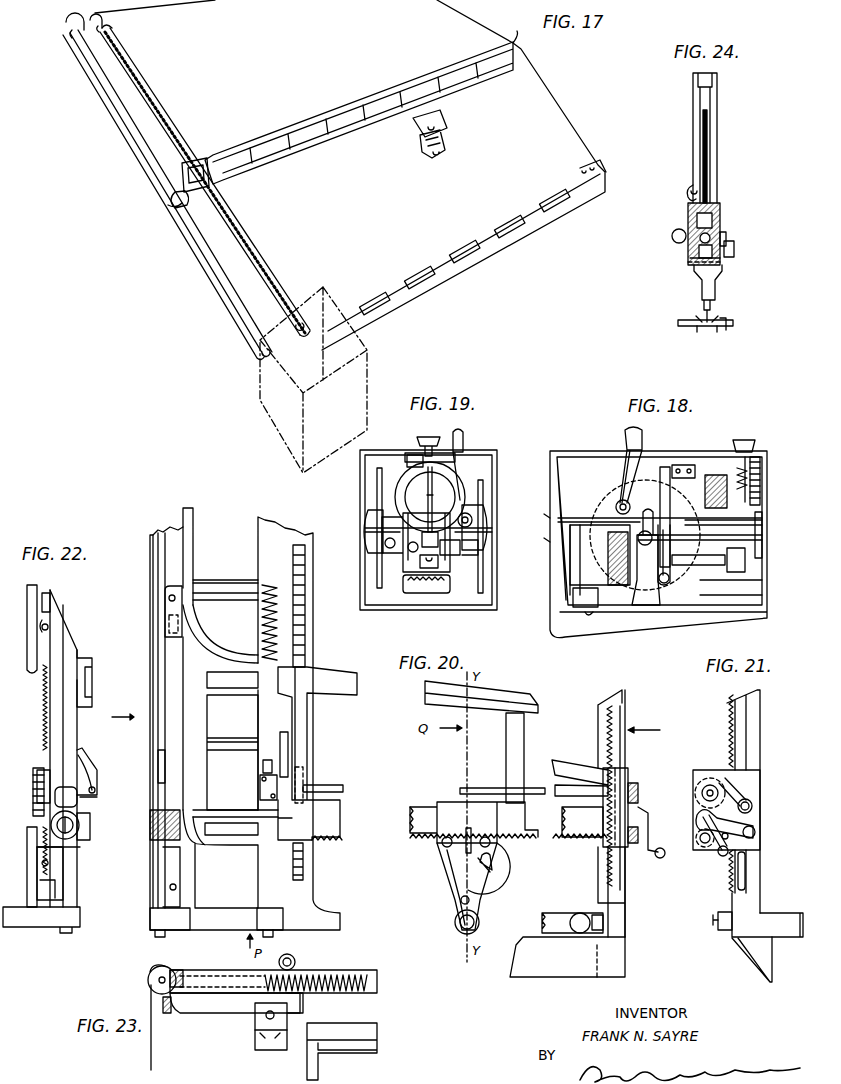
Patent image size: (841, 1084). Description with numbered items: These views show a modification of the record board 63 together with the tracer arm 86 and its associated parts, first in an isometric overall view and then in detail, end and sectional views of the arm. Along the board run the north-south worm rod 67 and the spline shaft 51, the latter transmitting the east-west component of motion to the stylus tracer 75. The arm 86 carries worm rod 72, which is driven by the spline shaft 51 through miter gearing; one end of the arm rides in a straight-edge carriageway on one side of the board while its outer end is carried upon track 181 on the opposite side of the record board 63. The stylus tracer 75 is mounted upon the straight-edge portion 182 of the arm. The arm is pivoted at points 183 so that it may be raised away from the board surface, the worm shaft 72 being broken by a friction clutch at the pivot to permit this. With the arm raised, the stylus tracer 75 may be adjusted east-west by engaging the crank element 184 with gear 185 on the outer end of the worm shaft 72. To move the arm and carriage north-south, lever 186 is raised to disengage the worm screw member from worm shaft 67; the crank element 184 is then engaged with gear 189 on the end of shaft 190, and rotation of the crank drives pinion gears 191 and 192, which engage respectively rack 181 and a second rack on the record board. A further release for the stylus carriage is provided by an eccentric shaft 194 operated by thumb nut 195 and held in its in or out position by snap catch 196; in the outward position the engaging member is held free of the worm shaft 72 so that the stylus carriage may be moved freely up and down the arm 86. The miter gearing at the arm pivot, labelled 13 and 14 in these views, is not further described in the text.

In FIG. 17, the spline shaft 51 is at (212, 260).
In FIG. 17, the north-south worm rod 67 is at (247, 247).
In FIG. 22, the north-south worm rod 67 is at (28, 785).
In FIG. 17, the tracer arm 86 is at (352, 102).
In FIG. 24, the tracer arm 86 is at (717, 111).
In FIG. 22, the tracer arm 86 is at (80, 847).
In FIG. 20, the tracer arm 86 is at (503, 699).
In FIG. 17, the stylus tracer 75 is at (383, 133).
In FIG. 24, the stylus tracer 75 is at (713, 286).
In FIG. 20, the stylus tracer 75 is at (480, 898).
In FIG. 24, the straight-edge portion 182 is at (689, 218).
In FIG. 20, the straight-edge portion 182 is at (428, 812).
In FIG. 24, the worm rod 72 is at (708, 236).
In FIG. 22, the worm rod 72 is at (315, 838).
In FIG. 20, the worm rod 72 is at (560, 846).
In FIG. 23, the worm rod 72 is at (208, 973).
In FIG. 24, the snap catch 196 is at (725, 236).
In FIG. 24, the thumb nut 195 is at (735, 250).
In FIG. 24, the eccentric shaft 194 is at (699, 252).
In FIG. 22, the gear 185 is at (58, 638).
In FIG. 20, the gear 185 is at (634, 855).
In FIG. 21, the gear 185 is at (703, 840).
In FIG. 22, the track 181 is at (44, 702).
In FIG. 20, the track 181 is at (623, 720).
In FIG. 21, the track 181 is at (727, 715).
In FIG. 22, the lever 186 is at (83, 760).
In FIG. 22, the roller 14 is at (150, 813).
In FIG. 23, the roller 14 is at (150, 973).
In FIG. 22, the pinion 13 is at (150, 827).
In FIG. 23, the pinion 13 is at (176, 970).
In FIG. 22, the pinion gear 192 is at (297, 780).
In FIG. 20, the pinion gear 191 is at (603, 778).
In FIG. 20, the shaft 190 is at (560, 790).
In FIG. 21, the gear 189 is at (700, 787).
In FIG. 21, the crank element 184 is at (715, 852).
In FIG. 20, the record board 63 is at (612, 909).
In FIG. 23, the record board 63 is at (372, 1035).
In FIG. 23, the pivot points 183 is at (297, 959).